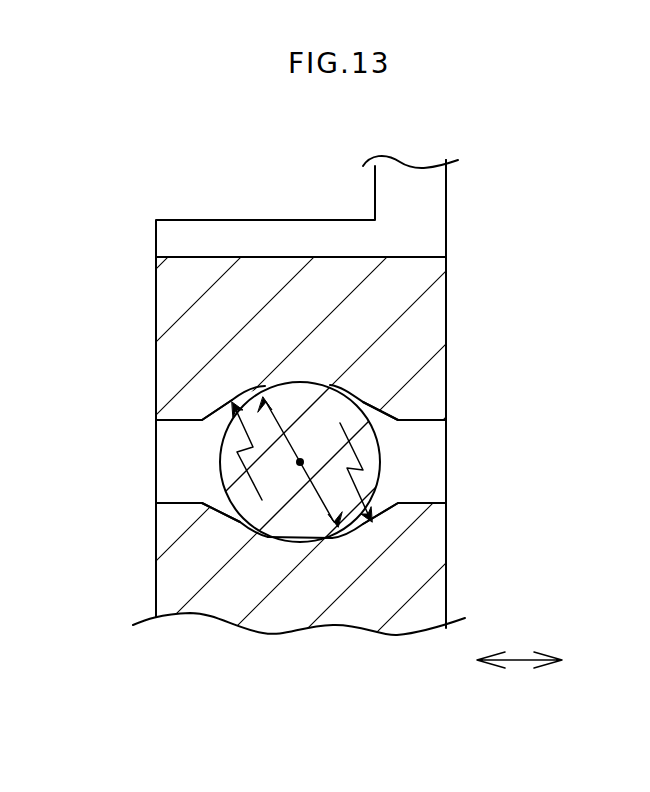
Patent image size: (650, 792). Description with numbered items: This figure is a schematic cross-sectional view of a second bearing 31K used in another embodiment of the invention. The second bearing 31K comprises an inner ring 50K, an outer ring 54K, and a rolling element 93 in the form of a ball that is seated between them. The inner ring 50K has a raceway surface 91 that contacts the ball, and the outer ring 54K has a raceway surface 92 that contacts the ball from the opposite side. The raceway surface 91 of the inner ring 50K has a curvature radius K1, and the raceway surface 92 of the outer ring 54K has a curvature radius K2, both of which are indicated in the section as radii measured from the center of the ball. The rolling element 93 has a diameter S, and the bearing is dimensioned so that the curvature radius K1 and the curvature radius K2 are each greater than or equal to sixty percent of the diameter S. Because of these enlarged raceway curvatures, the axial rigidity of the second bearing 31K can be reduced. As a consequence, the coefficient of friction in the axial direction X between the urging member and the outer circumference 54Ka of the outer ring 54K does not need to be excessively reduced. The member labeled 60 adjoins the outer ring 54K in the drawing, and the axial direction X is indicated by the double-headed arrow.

The housing member 60 is at (425, 202).
The outer ring 54K is at (172, 366).
The outer circumference 54Ka is at (262, 257).
The inner ring 50K is at (172, 580).
The second bearing 31K is at (470, 323).
The diameter S is at (303, 500).
The curvature radius K1 is at (360, 482).
The curvature radius K2 is at (247, 440).
The raceway surface 91 is at (222, 485).
The raceway surface 92 is at (373, 440).
The rolling element 93 is at (282, 520).
The axial direction X is at (522, 660).